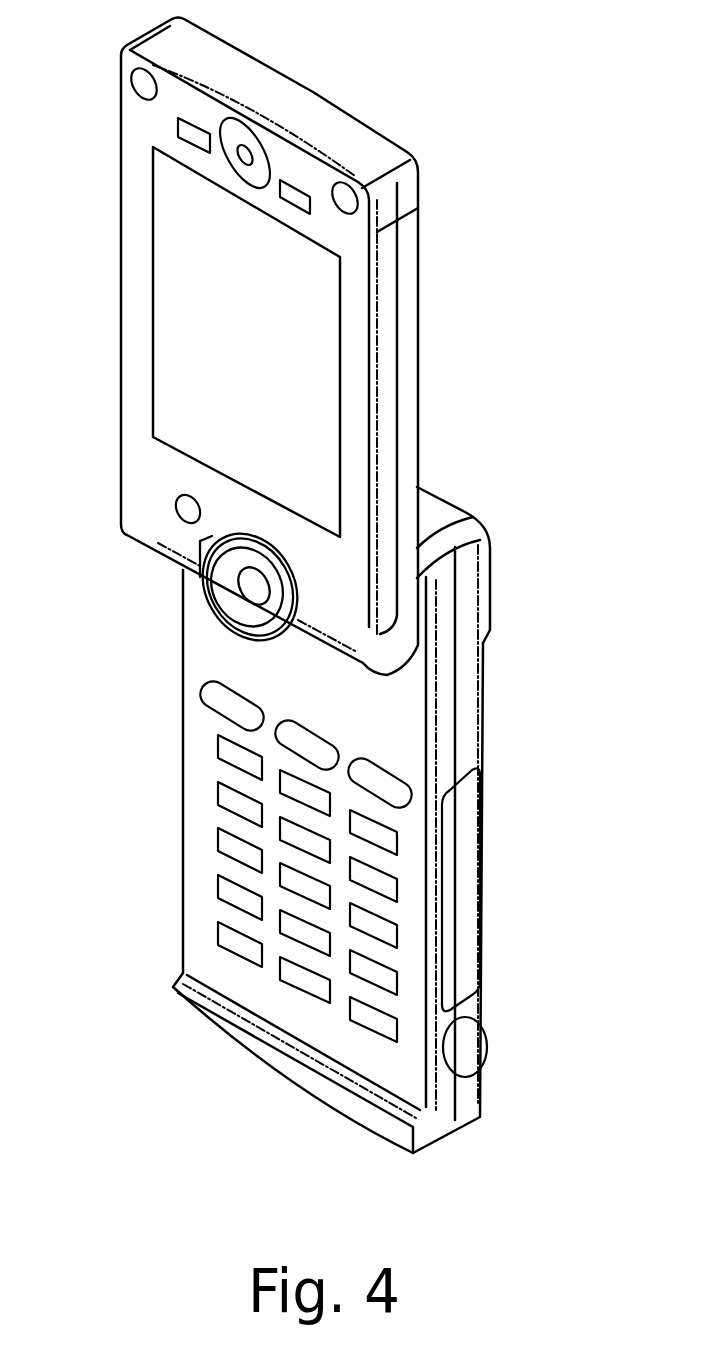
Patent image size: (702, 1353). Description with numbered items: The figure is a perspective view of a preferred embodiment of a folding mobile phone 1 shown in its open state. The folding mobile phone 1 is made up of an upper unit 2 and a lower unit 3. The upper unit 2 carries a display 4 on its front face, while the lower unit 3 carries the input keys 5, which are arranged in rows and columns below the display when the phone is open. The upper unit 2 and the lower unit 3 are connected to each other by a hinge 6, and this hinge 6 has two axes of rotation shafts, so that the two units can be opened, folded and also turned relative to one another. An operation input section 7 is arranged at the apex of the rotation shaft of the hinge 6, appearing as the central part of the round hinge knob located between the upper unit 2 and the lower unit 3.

The folding mobile phone 1 is at (298, 594).
The upper unit 2 is at (227, 337).
The lower unit 3 is at (366, 820).
The display 4 is at (173, 335).
The input keys 5 is at (380, 928).
The hinge 6 is at (319, 572).
The operation input section 7 is at (262, 588).